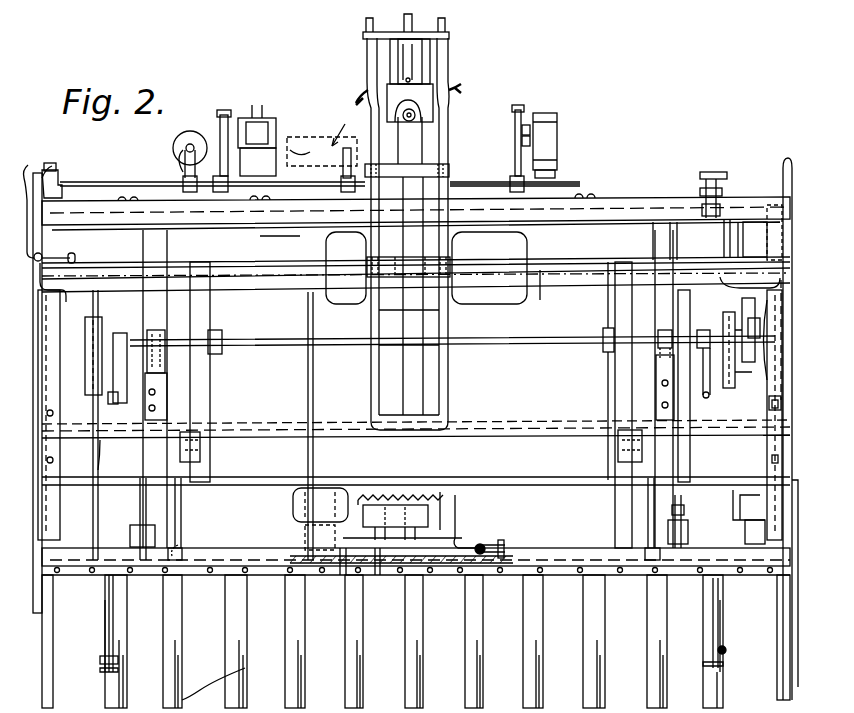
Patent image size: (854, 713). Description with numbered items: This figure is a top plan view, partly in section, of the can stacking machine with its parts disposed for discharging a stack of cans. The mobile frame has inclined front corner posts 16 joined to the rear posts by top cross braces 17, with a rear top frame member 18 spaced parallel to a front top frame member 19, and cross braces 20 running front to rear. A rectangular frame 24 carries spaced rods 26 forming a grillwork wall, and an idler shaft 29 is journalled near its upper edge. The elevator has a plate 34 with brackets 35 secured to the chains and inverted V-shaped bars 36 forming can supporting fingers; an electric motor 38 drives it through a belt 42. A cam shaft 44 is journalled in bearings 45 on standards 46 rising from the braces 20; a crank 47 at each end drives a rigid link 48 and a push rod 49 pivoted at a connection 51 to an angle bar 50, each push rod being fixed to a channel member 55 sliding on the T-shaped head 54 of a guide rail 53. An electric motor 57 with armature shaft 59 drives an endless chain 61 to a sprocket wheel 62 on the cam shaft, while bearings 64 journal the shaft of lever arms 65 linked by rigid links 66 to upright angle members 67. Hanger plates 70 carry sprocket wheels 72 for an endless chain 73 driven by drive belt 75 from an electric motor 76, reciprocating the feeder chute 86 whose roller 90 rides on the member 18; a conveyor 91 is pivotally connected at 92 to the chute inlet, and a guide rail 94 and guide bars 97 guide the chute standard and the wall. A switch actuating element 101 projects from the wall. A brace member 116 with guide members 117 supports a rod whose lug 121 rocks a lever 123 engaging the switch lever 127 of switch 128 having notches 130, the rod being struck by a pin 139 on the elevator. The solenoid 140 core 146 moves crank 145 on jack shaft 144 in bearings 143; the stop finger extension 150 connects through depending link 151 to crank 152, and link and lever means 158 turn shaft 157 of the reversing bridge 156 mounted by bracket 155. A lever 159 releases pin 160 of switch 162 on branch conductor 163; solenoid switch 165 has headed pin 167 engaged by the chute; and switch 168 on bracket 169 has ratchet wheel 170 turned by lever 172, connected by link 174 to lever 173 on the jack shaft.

The front corner posts 16 is at (785, 378).
The top cross braces 17 is at (792, 225).
The top frame member 18 is at (600, 203).
The top frame member 19 is at (228, 270).
The cross braces 20 is at (195, 424).
The rectangular frame 24 is at (236, 548).
The rods 26 is at (200, 578).
The shaft 29 is at (590, 524).
The plate 34 is at (330, 570).
The brackets 35 is at (720, 322).
The bars 36 is at (226, 675).
The electric motor 38 is at (342, 304).
The belt 42 is at (314, 403).
The cam shaft 44 is at (250, 340).
The bearings 45 is at (163, 336).
The standards 46 is at (158, 402).
The crank 47 is at (118, 378).
The rigid link 48 is at (108, 474).
The push rod 49 is at (106, 598).
The bar 50 is at (106, 672).
The pivotal connection 51 is at (100, 660).
The guide rail 53 is at (48, 350).
The T-shaped head 54 is at (98, 306).
The channel member 55 is at (86, 342).
The electric motor 57 is at (490, 304).
The armature shaft 59 is at (538, 264).
The endless chain 61 is at (582, 330).
The sprocket wheel 62 is at (604, 350).
The bearings 64 is at (784, 406).
The lever arms 65 is at (180, 450).
The rigid link 66 is at (182, 516).
The upright angle member 67 is at (172, 565).
The hanger plate 70 is at (126, 206).
The sprocket wheel 72 is at (708, 172).
The endless chain 73 is at (606, 230).
The drive belt 75 is at (698, 186).
The electric motor 76 is at (738, 250).
The feeder chute 86 is at (452, 400).
The roller 90 is at (682, 520).
The conveyor 91 is at (424, 64).
The pivotal connection 92 is at (416, 118).
The guide rail 94 is at (265, 274).
The guide bars 97 is at (786, 308).
The switch actuating element 101 is at (749, 516).
The brace member 116 is at (456, 530).
The guide members 117 is at (405, 560).
The lug 121 is at (462, 538).
The lever 123 is at (350, 562).
The switch lever 127 is at (360, 500).
The switch 128 is at (322, 490).
The notches 130 is at (408, 494).
The pin 139 is at (500, 540).
The solenoid 140 is at (205, 108).
The bearings 143 is at (66, 178).
The jack shaft 144 is at (124, 178).
The crank 145 is at (176, 166).
The core 146 is at (190, 120).
The extension 150 is at (27, 165).
The depending link 151 is at (48, 160).
The crank 152 is at (54, 166).
The bracket 155 is at (262, 226).
The reversing bridge 156 is at (276, 126).
The shaft 157 is at (282, 132).
The link and lever means 158 is at (222, 115).
The lever 159 is at (352, 160).
The pin 160 is at (322, 151).
The switch 162 is at (341, 128).
The branch conductor 163 is at (588, 438).
The solenoid switch 165 is at (48, 241).
The headed pin 167 is at (76, 258).
The switch 168 is at (556, 114).
The bracket 169 is at (528, 194).
The ratchet wheel 170 is at (514, 158).
The lever 172 is at (520, 127).
The lever 173 is at (520, 142).
The link 174 is at (516, 107).